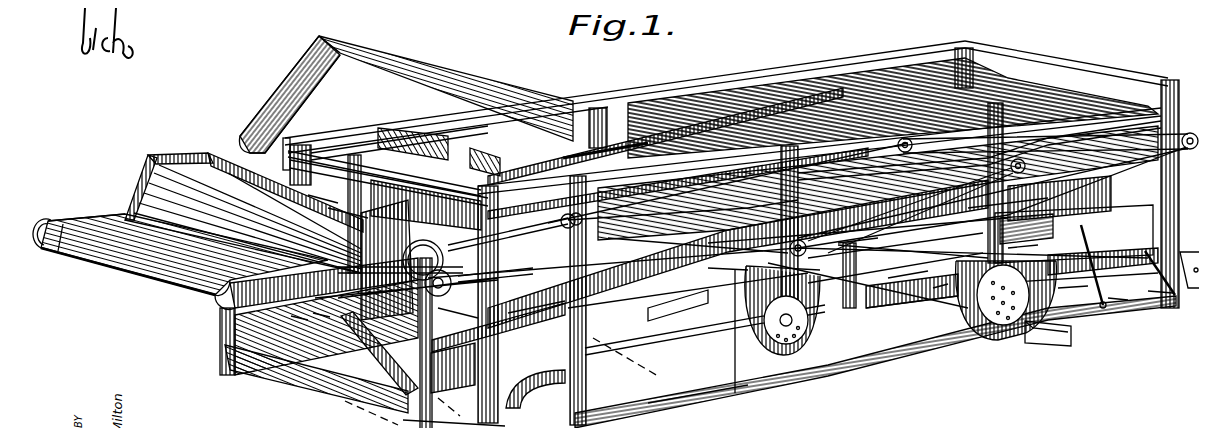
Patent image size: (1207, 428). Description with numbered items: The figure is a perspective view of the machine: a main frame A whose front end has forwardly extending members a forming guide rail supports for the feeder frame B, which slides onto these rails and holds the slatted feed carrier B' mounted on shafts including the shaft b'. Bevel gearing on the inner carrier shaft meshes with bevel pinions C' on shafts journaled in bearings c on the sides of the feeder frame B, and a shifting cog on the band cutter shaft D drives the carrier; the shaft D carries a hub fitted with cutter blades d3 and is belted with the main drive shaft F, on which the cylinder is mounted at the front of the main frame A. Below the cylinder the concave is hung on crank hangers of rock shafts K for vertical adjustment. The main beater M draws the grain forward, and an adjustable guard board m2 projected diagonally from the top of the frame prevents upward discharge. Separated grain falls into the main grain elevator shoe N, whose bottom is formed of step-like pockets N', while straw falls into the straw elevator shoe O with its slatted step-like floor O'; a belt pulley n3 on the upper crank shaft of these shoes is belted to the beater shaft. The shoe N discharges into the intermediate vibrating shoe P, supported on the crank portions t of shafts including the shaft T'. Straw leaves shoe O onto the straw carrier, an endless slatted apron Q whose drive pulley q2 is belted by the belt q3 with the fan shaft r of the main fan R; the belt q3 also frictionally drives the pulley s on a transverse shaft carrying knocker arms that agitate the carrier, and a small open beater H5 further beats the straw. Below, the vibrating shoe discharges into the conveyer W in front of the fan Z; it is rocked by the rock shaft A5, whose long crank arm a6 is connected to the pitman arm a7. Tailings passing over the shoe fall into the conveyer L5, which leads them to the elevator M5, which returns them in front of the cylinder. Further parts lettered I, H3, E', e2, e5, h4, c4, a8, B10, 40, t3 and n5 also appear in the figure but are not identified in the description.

The endless slatted apron Q is at (870, 100).
The drive pulley q2 is at (998, 182).
The belt q3 is at (1003, 256).
The pulley s is at (916, 195).
The main drive shaft F is at (1074, 234).
The slatted step-like portions O' is at (738, 254).
The straw elevator shoe O is at (588, 147).
The beam H3 is at (573, 203).
The small open beater H5 is at (778, 115).
The main beater M is at (405, 151).
The elevator M5 is at (406, 94).
The adjustable guard board m2 is at (303, 147).
The side frame I is at (182, 168).
The cutter blades d3 is at (222, 174).
The band cutter shaft D is at (323, 187).
The roller E' is at (348, 197).
The feeder frame B is at (180, 238).
The shaft b' is at (89, 268).
The slatted feed carrier B' is at (282, 283).
The rock shafts K is at (215, 368).
The main grain elevator shoe N is at (321, 354).
The transverse angular step-like pockets N' is at (364, 370).
The forwardly extending members a is at (287, 310).
The rod e2 is at (307, 307).
The bevel pinions C' is at (358, 260).
The bearings c is at (460, 254).
The lever e5 is at (458, 326).
The lever h4 is at (536, 316).
The fan shaft r is at (762, 345).
The main fan R is at (682, 300).
The main frame A is at (698, 406).
The hopper c4 is at (1006, 300).
The conveyer W is at (1057, 339).
The pitman arm a7 is at (1088, 268).
The long crank arm a6 is at (1157, 260).
The conveyer L5 is at (1188, 272).
The rod a8 is at (1147, 287).
The bar B10 is at (1103, 297).
The rock shaft A5 is at (1072, 297).
The fan Z is at (912, 317).
The belt pulley n3 is at (908, 283).
The rod 40 is at (934, 295).
The crank portions t is at (1008, 206).
The shaft T' is at (898, 248).
The intermediate vibrating shoe P is at (1023, 243).
The rod t3 is at (858, 234).
The rod n5 is at (773, 201).